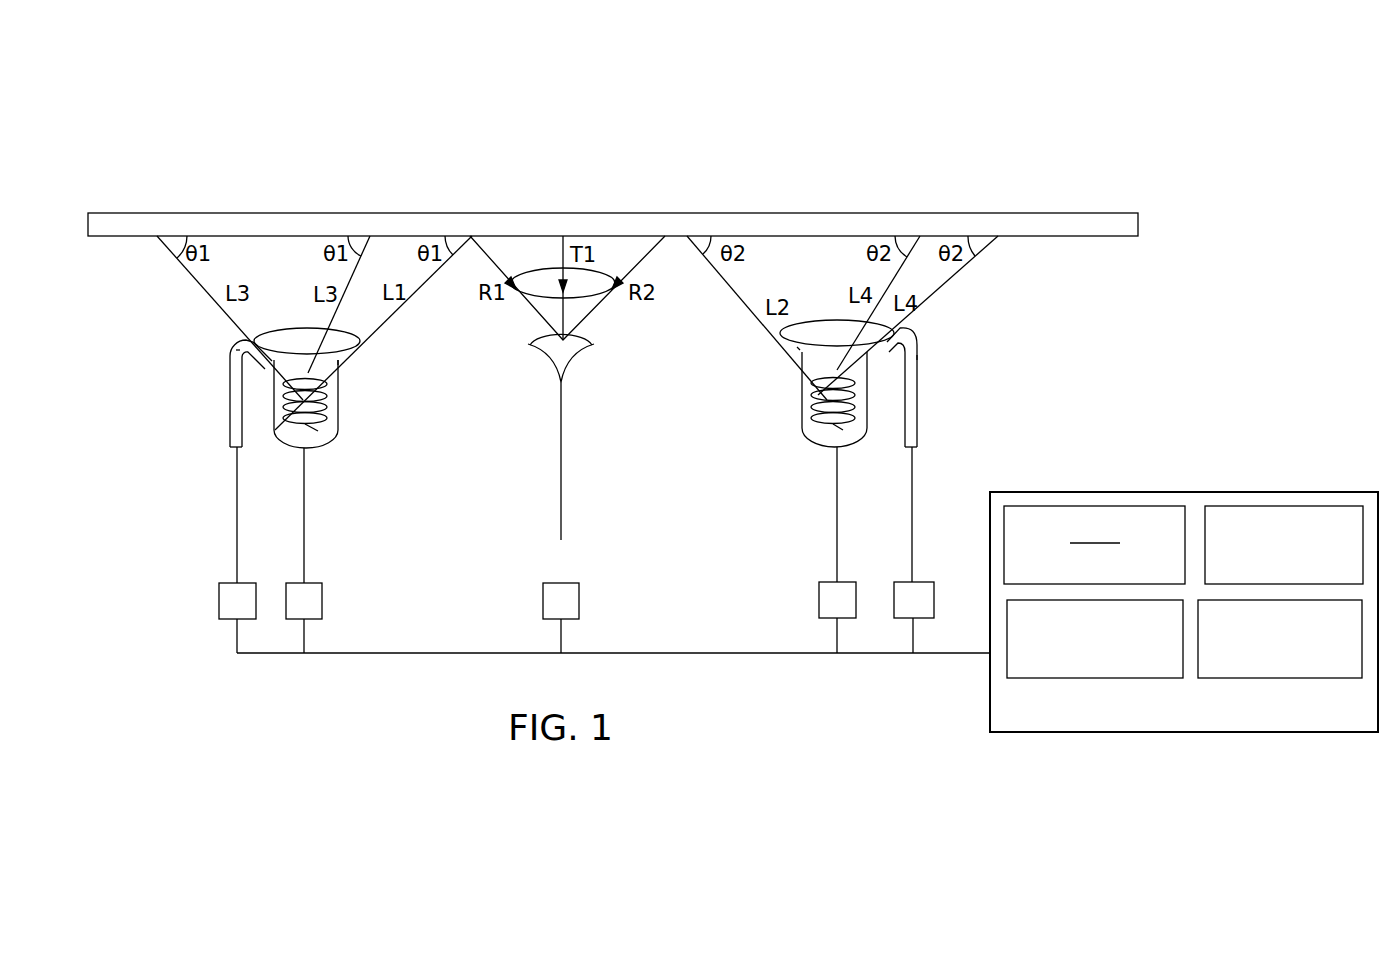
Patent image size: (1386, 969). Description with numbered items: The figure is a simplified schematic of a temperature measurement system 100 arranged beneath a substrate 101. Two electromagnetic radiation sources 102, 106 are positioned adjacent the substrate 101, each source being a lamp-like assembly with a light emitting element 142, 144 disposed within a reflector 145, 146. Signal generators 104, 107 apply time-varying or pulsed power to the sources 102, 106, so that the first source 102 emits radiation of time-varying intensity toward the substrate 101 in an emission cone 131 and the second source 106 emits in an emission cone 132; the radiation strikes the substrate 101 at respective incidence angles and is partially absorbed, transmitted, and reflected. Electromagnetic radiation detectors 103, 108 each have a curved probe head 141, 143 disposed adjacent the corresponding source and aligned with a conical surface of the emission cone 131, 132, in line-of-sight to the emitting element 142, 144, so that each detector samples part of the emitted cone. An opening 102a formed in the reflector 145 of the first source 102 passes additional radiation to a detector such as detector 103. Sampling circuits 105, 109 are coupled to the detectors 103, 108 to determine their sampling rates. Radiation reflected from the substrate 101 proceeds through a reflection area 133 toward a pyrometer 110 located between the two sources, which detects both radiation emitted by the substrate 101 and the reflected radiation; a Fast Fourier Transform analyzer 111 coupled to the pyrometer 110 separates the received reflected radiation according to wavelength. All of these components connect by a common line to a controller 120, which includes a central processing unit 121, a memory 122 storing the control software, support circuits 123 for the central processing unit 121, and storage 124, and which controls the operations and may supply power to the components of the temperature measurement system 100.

The temperature measurement system 100 is at (737, 90).
The substrate 101 is at (1037, 237).
The electromagnetic radiation source 102 is at (352, 430).
The opening 102a is at (265, 441).
The electromagnetic radiation detector 103 is at (230, 410).
The signal generator 104 is at (322, 592).
The sampling circuit 105 is at (219, 598).
The electromagnetic radiation source 106 is at (787, 427).
The signal generator 107 is at (820, 597).
The detector 108 is at (917, 432).
The sampling circuit 109 is at (894, 597).
The pyrometer 110 is at (573, 351).
The Fast Fourier Transform analyzer 111 is at (580, 590).
The controller 120 is at (1178, 722).
The central processing unit 121 is at (1117, 577).
The memory 122 is at (1302, 577).
The support circuits 123 is at (1170, 668).
The storage 124 is at (1297, 672).
The emission cone 131 is at (345, 358).
The emission cone 132 is at (797, 347).
The reflection area 133 is at (592, 297).
The probe head 141 is at (236, 357).
The emitting element 142 is at (318, 431).
The probe head 143 is at (917, 357).
The emitting element 144 is at (843, 430).
The reflector 145 is at (343, 401).
The reflector 146 is at (800, 388).